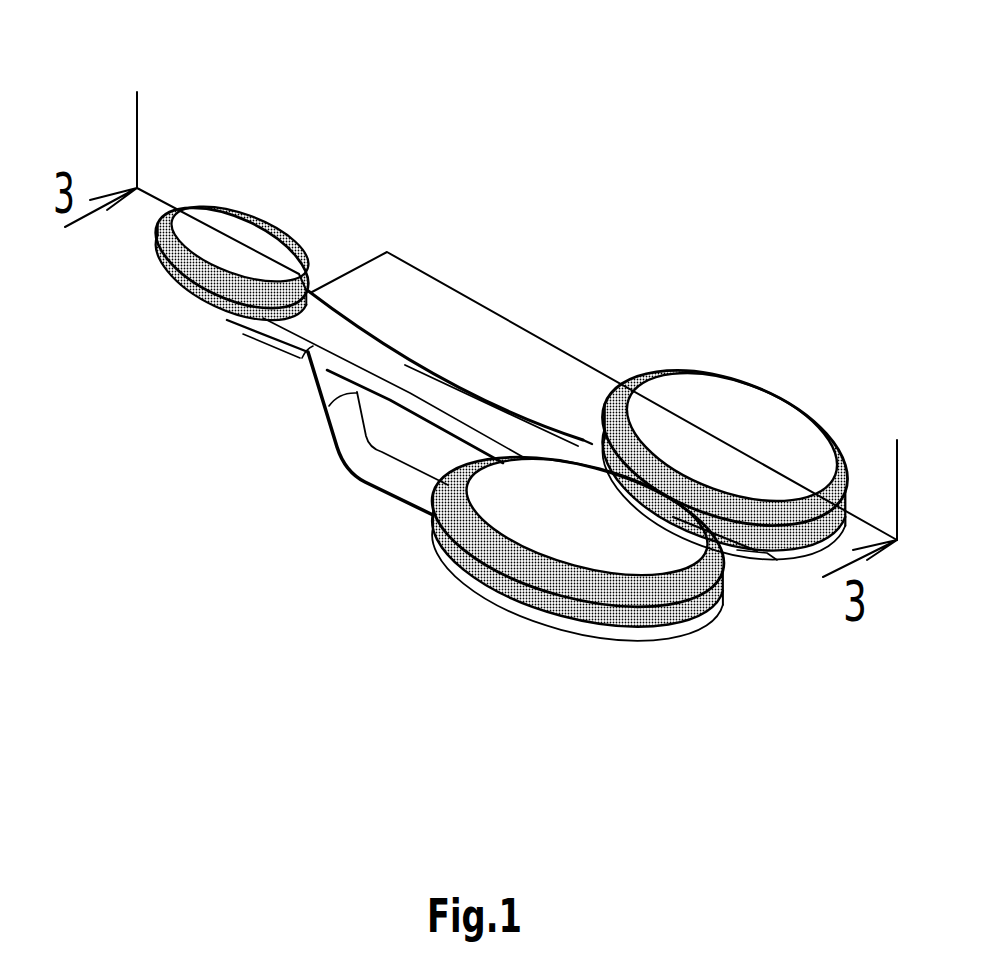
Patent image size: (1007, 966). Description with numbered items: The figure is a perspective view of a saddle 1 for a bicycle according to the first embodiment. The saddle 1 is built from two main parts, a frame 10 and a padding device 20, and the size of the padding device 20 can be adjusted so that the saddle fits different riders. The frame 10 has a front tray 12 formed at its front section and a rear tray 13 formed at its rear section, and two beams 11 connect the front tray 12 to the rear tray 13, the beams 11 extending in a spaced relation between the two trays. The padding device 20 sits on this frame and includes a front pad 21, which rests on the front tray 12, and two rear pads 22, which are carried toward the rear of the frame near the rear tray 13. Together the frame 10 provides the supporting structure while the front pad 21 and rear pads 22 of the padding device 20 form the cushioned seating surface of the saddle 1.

The saddle 1 is at (441, 104).
The frame 10 is at (241, 563).
The beams 11 is at (380, 477).
The front tray 12 is at (237, 340).
The rear tray 13 is at (727, 547).
The padding device 20 is at (641, 253).
The front pad 21 is at (240, 232).
The rear pads 22 is at (743, 398).